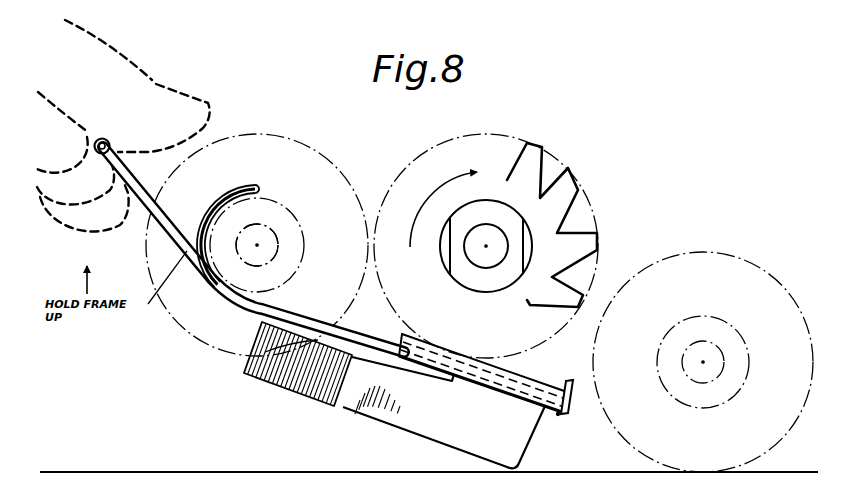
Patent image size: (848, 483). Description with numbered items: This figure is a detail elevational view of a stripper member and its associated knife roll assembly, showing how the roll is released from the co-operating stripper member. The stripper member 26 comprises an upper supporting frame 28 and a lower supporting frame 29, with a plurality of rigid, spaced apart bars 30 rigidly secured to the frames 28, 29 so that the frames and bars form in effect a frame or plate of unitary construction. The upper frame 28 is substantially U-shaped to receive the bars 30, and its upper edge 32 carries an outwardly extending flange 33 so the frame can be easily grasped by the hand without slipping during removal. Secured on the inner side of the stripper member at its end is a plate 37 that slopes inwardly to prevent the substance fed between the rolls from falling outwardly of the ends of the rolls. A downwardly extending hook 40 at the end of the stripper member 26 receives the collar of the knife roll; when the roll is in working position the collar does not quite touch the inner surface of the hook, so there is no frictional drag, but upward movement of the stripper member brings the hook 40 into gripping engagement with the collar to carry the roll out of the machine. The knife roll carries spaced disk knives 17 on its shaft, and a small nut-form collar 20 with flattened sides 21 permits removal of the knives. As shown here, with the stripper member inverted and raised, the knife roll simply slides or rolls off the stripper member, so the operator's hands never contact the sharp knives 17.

The disk knife 17 is at (514, 142).
The collar 20 is at (521, 228).
The flattened sides 21 is at (486, 246).
The front stripper member 26 is at (553, 382).
The upper supporting frame 28 is at (524, 382).
The lower supporting frame 29 is at (108, 142).
The bars 30 is at (152, 204).
The upper edge 32 is at (558, 417).
The flange 33 is at (569, 397).
The plate 37 is at (346, 405).
The hook 40 is at (242, 185).